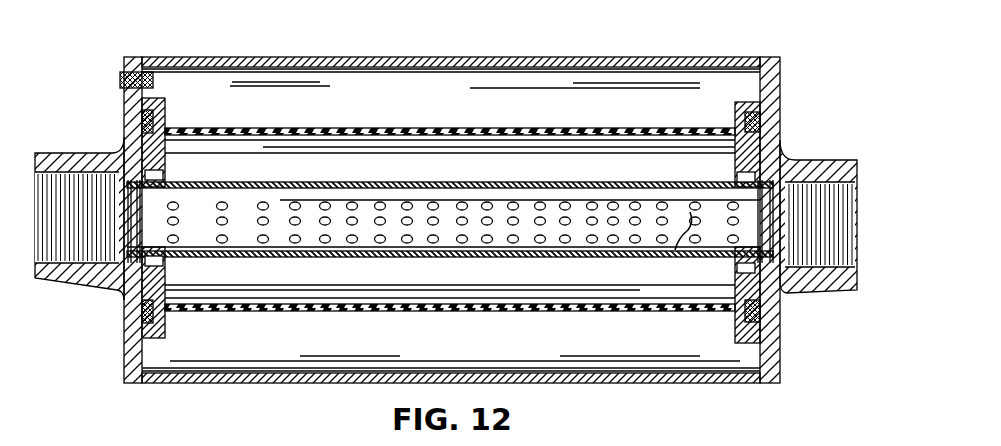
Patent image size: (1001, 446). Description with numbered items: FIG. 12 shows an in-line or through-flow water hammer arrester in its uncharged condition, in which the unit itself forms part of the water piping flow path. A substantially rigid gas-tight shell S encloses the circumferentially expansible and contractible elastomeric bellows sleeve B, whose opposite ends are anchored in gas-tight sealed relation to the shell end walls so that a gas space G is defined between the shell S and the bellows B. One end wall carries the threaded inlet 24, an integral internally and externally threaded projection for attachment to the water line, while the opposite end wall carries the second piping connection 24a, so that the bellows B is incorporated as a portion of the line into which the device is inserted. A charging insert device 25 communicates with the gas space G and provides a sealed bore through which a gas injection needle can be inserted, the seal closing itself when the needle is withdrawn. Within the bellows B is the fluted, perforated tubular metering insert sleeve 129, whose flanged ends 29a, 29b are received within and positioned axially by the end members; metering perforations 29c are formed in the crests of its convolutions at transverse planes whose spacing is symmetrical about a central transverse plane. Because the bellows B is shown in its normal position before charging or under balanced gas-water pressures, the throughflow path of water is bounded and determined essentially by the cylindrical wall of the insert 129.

The shell S is at (542, 56).
The charging insert device 25 is at (120, 80).
The inlet 24 is at (90, 153).
The second piping connection 24a is at (812, 160).
The bellows sleeve B is at (378, 117).
The gas space G is at (549, 101).
The metering insert sleeve 129 is at (646, 216).
The flanged end 29a is at (736, 266).
The flanged end 29b is at (165, 257).
The metering perforations 29c is at (676, 251).